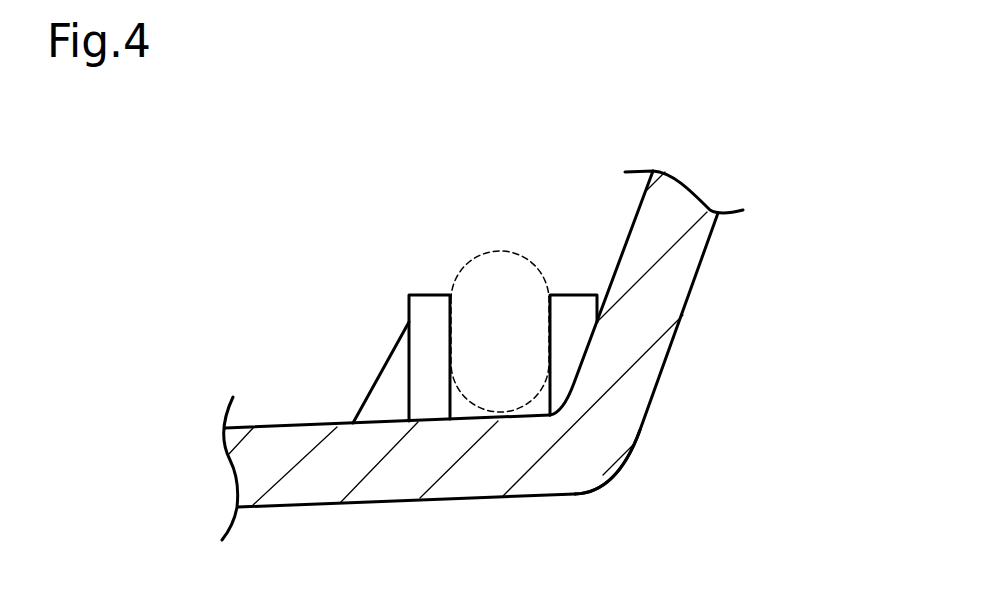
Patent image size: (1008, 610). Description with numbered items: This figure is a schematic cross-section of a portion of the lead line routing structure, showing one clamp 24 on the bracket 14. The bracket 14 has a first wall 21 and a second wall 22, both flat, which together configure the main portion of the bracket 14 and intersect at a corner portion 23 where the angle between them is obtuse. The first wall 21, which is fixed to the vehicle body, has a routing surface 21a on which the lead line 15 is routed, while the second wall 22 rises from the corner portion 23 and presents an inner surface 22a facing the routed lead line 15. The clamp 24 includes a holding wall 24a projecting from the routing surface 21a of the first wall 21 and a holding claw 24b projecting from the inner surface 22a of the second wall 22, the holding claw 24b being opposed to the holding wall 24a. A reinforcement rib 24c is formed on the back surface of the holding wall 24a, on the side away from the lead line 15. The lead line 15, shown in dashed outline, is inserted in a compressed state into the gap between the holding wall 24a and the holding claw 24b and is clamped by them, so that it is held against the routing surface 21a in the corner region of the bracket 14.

The bracket 14 is at (472, 498).
The lead line 15 is at (500, 250).
The first wall 21 is at (385, 477).
The routing surface 21a is at (245, 428).
The second wall 22 is at (670, 293).
The inner surface 22a is at (638, 212).
The corner portion 23 is at (592, 459).
The clamp 24 is at (452, 328).
The holding wall 24a is at (428, 294).
The holding claw 24b is at (574, 294).
The reinforcement rib 24c is at (386, 364).